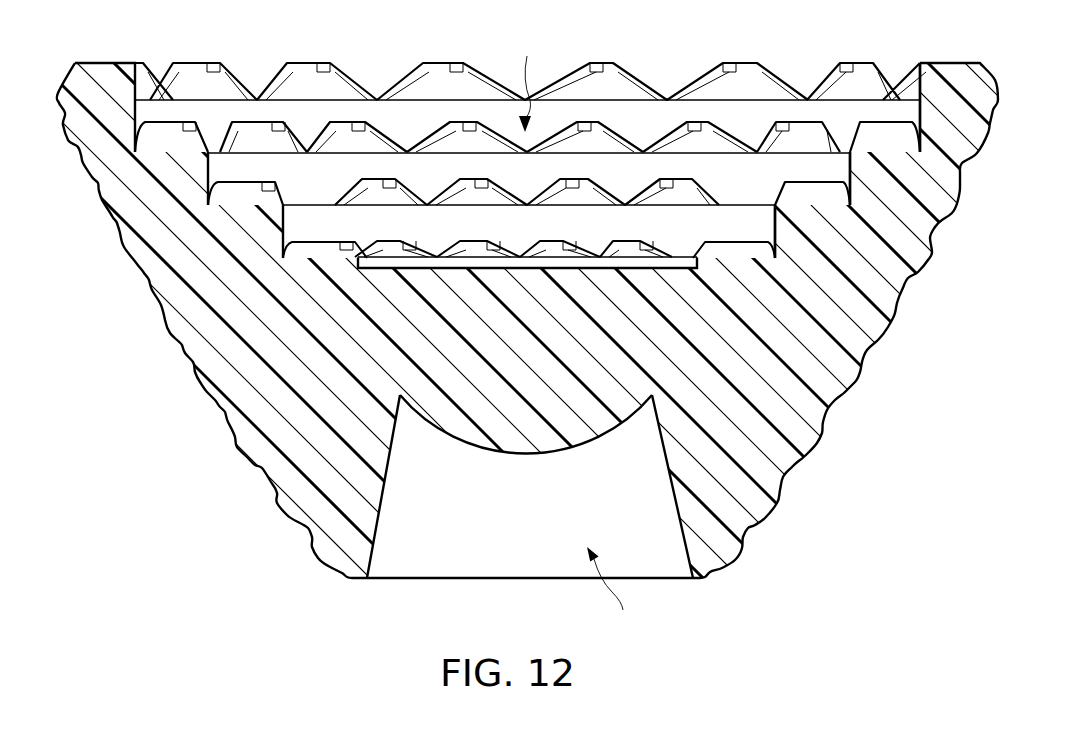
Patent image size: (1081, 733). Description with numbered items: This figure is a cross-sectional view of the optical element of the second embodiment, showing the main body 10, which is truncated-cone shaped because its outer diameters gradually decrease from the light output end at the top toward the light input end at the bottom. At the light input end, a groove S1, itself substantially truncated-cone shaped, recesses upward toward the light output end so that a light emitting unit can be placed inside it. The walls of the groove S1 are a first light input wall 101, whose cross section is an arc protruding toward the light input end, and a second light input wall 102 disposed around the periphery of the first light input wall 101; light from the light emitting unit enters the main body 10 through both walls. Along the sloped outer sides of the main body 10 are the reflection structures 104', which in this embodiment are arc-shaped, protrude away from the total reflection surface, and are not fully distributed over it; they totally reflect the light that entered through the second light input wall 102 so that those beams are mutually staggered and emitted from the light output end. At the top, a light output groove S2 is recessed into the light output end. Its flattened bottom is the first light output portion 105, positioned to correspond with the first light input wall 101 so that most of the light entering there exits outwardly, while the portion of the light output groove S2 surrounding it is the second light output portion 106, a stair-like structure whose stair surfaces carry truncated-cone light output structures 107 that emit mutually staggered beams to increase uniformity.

The main body 10 is at (270, 386).
The first light input wall 101 is at (525, 453).
The second light input wall 102 is at (382, 503).
The reflection structures 104' is at (910, 179).
The first light output portion 105 is at (695, 259).
The second light output portion 106 is at (390, 150).
The light output structures 107 is at (230, 88).
The groove S1 is at (621, 586).
The light output groove S2 is at (524, 82).